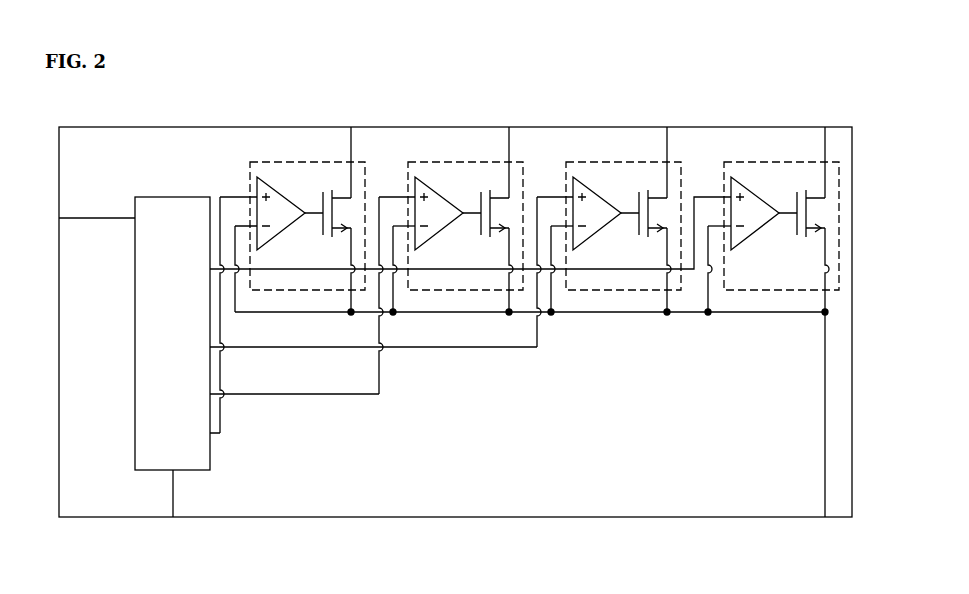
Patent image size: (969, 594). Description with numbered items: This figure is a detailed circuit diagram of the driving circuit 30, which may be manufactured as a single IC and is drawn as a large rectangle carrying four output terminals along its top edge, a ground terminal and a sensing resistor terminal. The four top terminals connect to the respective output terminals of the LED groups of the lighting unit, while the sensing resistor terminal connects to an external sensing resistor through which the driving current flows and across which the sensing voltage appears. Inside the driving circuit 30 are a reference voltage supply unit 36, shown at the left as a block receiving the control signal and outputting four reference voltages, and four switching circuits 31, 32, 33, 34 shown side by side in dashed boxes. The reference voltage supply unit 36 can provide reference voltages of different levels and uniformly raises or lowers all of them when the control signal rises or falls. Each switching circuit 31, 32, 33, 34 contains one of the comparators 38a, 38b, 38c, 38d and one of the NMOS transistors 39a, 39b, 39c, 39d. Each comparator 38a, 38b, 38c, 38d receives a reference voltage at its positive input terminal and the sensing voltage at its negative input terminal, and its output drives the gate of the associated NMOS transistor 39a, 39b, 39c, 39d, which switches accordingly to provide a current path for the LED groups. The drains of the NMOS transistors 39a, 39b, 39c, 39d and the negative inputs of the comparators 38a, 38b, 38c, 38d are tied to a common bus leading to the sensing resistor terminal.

The driving circuit 30 is at (249, 519).
The reference voltage supply unit 36 is at (157, 196).
The switching circuit 31 is at (307, 221).
The switching circuit 32 is at (465, 221).
The switching circuit 33 is at (623, 221).
The switching circuit 34 is at (781, 221).
The comparator 38a is at (287, 234).
The comparator 38b is at (445, 234).
The comparator 38c is at (603, 234).
The comparator 38d is at (761, 234).
The NMOS transistor 39a is at (323, 201).
The NMOS transistor 39b is at (481, 201).
The NMOS transistor 39c is at (639, 201).
The NMOS transistor 39d is at (797, 201).